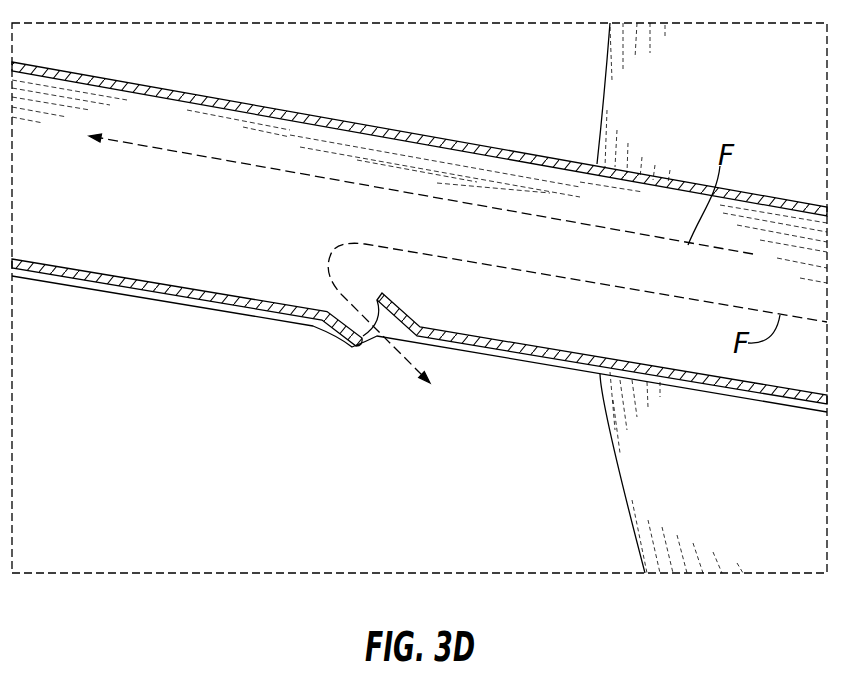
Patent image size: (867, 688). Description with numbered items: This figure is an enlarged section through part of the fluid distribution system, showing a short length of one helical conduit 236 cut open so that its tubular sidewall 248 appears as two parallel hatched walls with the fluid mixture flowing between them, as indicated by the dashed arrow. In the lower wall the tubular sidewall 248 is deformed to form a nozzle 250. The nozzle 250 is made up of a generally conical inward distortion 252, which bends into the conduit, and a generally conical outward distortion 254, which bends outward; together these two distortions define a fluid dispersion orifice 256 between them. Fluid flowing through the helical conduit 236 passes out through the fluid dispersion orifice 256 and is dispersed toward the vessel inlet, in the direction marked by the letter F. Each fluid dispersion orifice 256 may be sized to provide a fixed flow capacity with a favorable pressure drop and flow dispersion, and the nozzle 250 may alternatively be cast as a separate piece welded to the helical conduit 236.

The helical conduit 236 is at (258, 94).
The tubular sidewall 248 is at (443, 162).
The nozzle 250 is at (341, 351).
The inward distortion 252 is at (399, 310).
The outward distortion 254 is at (330, 334).
The fluid dispersion orifice 256 is at (391, 329).